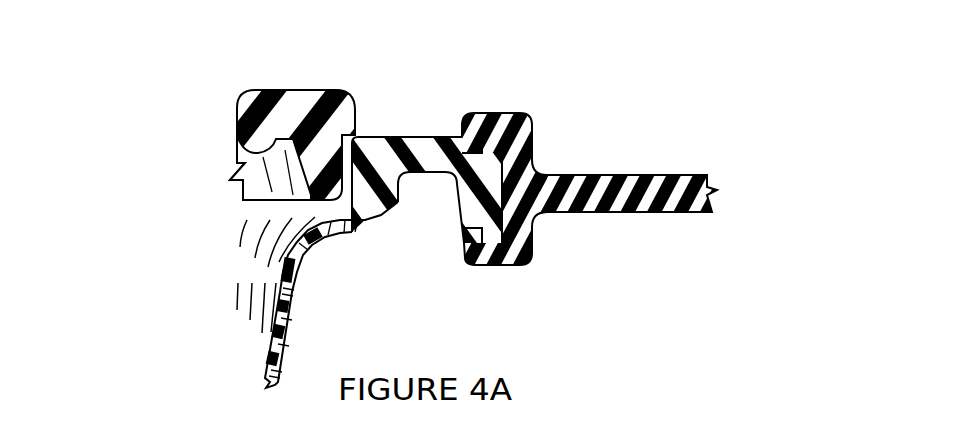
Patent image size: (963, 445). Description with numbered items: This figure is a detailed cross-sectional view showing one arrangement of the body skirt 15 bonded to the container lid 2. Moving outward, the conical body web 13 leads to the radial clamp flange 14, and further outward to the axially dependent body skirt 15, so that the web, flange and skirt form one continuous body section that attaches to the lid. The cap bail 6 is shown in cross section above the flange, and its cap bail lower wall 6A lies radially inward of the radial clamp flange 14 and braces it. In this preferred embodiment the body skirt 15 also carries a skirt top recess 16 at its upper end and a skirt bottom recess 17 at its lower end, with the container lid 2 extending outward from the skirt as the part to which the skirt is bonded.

The cap bail 6 is at (262, 92).
The cap bail lower wall 6A is at (310, 170).
The conical body web 13 is at (282, 314).
The radial clamp flange 14 is at (414, 137).
The body skirt 15 is at (533, 138).
The skirt top recess 16 is at (486, 118).
The skirt bottom recess 17 is at (469, 252).
The container lid 2 is at (613, 212).